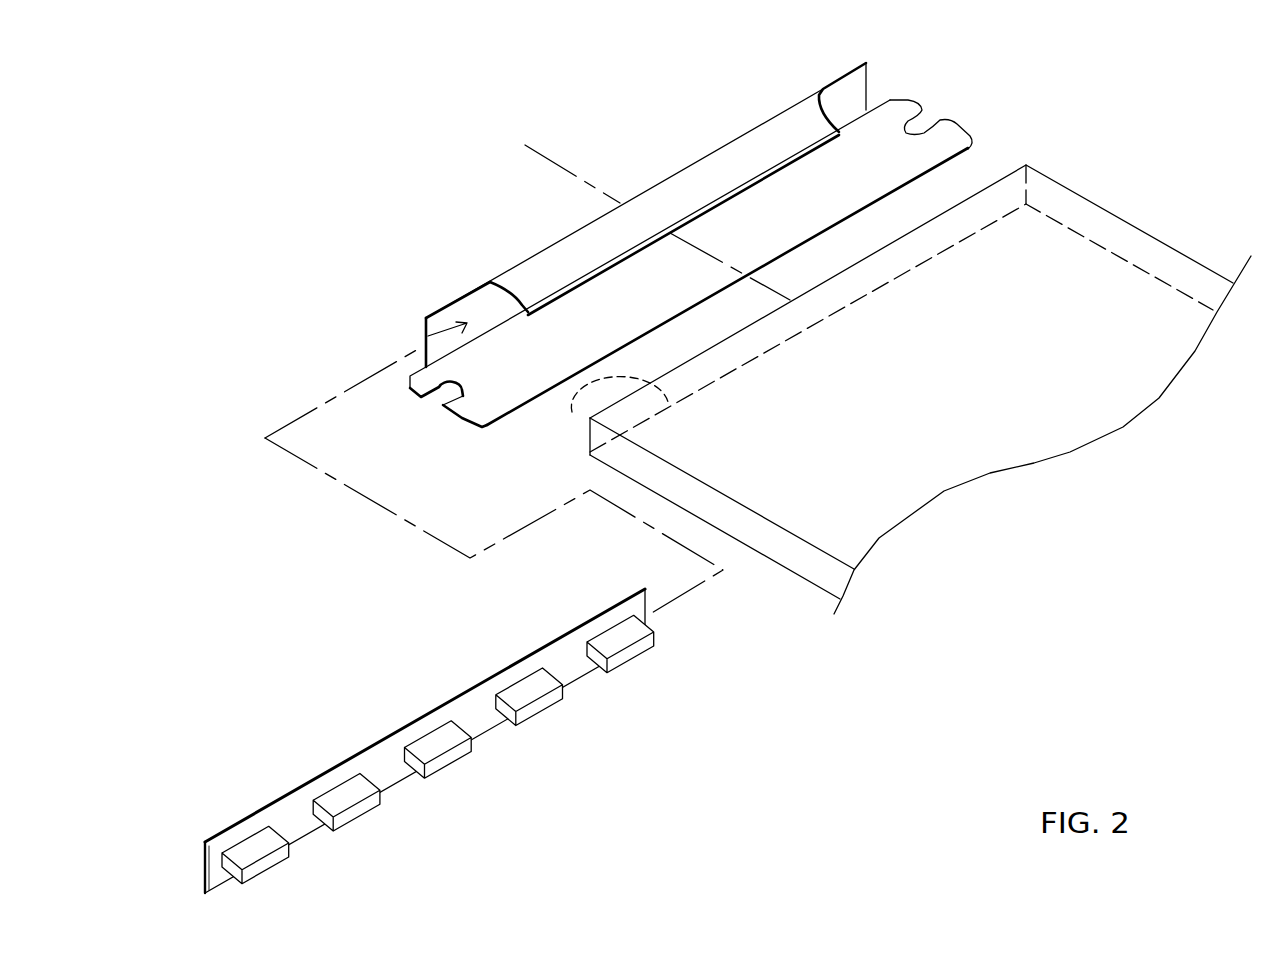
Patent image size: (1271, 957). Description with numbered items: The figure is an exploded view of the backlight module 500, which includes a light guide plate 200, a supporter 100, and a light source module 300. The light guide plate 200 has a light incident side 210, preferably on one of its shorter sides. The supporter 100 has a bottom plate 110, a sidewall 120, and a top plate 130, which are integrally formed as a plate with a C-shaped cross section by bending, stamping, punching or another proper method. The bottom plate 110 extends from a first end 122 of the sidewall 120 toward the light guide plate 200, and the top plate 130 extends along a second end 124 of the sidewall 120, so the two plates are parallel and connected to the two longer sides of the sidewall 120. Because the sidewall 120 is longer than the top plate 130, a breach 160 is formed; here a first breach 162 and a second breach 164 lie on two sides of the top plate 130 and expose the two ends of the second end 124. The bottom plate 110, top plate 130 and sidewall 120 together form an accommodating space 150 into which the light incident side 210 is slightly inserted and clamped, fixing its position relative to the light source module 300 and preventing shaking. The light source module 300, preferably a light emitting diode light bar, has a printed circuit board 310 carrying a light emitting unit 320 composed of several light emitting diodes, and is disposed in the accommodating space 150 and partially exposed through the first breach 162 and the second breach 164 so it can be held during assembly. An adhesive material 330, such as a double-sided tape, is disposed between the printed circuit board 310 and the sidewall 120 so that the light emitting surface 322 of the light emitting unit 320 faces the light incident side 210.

The supporter 100 is at (661, 277).
The bottom plate 110 is at (687, 303).
The sidewall 120 is at (608, 249).
The first end 122 is at (453, 404).
The second end 124 is at (472, 282).
The top plate 130 is at (568, 250).
The accommodating space 150 is at (427, 339).
The breach 160 is at (670, 179).
The first breach 162 is at (485, 301).
The second breach 164 is at (826, 101).
The light guide plate 200 is at (885, 389).
The light incident side 210 is at (574, 411).
The light source module 300 is at (421, 741).
The printed circuit board 310 is at (467, 712).
The light emitting unit 320 is at (438, 749).
The light emitting surface 322 is at (360, 810).
The adhesive material 330 is at (263, 810).
The backlight module 500 is at (221, 269).